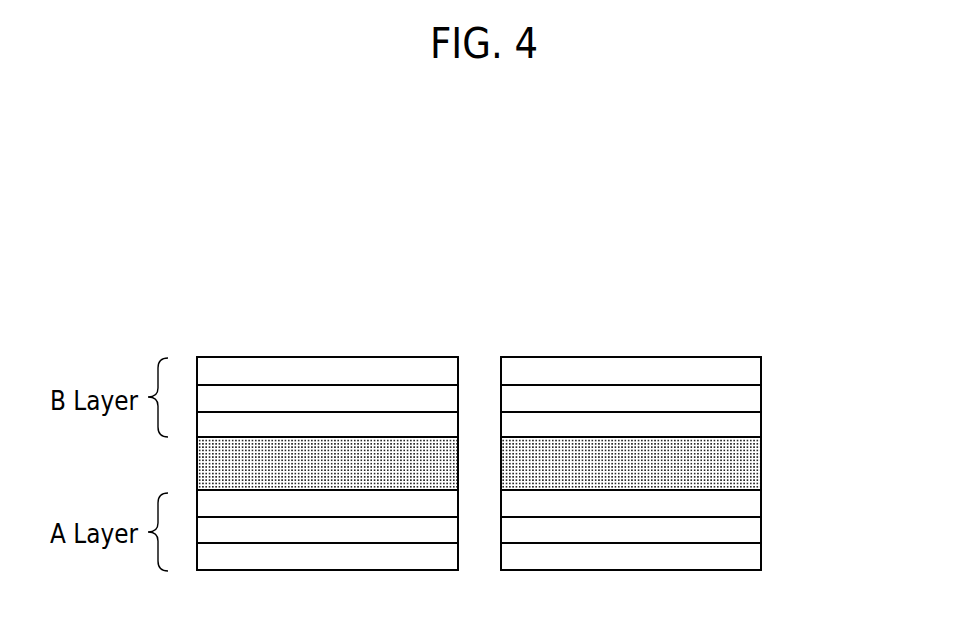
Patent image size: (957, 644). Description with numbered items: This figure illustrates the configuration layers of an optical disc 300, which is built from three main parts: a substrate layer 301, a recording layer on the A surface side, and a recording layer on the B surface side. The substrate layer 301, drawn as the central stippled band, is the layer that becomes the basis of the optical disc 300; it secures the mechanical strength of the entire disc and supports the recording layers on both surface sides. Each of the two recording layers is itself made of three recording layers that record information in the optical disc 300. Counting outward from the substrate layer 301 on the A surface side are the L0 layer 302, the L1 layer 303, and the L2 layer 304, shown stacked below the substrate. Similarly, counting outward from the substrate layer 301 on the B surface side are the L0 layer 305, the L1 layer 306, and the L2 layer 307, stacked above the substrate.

The optical disc 300 is at (551, 251).
The substrate layer 301 is at (775, 467).
The L0 layer 302 is at (775, 513).
The L1 layer 303 is at (775, 537).
The L2 layer 304 is at (775, 562).
The L0 layer 305 is at (775, 429).
The L1 layer 306 is at (775, 403).
The L2 layer 307 is at (775, 376).